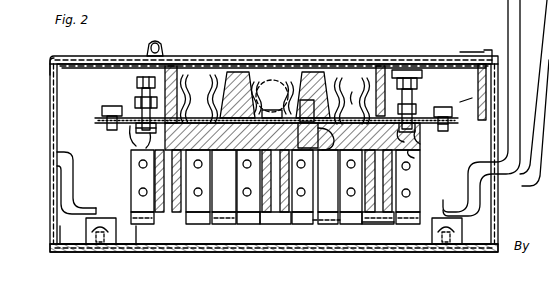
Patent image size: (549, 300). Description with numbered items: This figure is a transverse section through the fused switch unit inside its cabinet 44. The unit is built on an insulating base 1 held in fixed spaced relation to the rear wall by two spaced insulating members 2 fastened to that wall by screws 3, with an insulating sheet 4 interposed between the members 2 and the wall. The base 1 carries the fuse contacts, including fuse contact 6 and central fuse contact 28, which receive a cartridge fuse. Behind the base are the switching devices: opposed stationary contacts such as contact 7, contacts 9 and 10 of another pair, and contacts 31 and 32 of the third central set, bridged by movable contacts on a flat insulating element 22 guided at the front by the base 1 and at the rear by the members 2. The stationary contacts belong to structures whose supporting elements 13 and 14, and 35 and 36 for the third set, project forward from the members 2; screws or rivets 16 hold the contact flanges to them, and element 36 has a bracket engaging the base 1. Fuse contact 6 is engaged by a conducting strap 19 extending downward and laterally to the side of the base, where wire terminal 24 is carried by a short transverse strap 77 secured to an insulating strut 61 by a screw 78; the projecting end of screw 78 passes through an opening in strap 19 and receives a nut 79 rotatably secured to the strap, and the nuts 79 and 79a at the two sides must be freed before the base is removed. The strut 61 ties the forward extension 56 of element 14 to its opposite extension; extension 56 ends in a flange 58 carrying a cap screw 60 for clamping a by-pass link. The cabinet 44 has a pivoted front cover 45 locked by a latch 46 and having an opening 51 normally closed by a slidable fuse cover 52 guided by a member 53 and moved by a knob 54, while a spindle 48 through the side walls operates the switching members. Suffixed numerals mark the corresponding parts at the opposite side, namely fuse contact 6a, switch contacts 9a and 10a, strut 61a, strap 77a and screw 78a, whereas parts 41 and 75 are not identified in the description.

The insulating base 1 is at (400, 78).
The insulating supporting members 2 is at (240, 244).
The screws 3 is at (112, 234).
The sheet of insulating material 4 is at (152, 252).
The fuse contact 6 is at (364, 92).
The insulating block 6a is at (224, 88).
The stationary switch contact 7 is at (292, 108).
The stationary switch contact 9 is at (370, 216).
The contact plate 9a is at (196, 176).
The stationary switch contact 10 is at (410, 186).
The terminal block 10a is at (132, 186).
The supporting element 13 is at (322, 216).
The supporting element 14 is at (406, 140).
The screws or rivets 16 is at (416, 192).
The conducting strap 19 is at (351, 100).
The flat insulating element 22 is at (372, 222).
The wire connecting terminal 24 is at (450, 112).
The fuse contact 28 is at (278, 88).
The switch contact 31 is at (264, 187).
The switch contact 32 is at (302, 187).
The supporting element 35 is at (236, 212).
The supporting element 36 is at (300, 212).
The clamp 41 is at (316, 135).
The cabinet 44 is at (384, 252).
The front cover 45 is at (50, 62).
The latch 46 is at (490, 50).
The spindle 48 is at (466, 200).
The opening in cover 51 is at (274, 50).
The fuse cover 52 is at (200, 58).
The guiding member 53 is at (461, 49).
The knob 54 is at (155, 42).
The forward extension 56 is at (416, 110).
The flange 58 is at (414, 98).
The cap screw 60 is at (476, 83).
The insulating strut 61 is at (418, 134).
The spring contact 61a is at (128, 132).
The conductor bar 75 is at (276, 115).
The transverse strap 77 is at (450, 128).
The nut 77a is at (116, 128).
The screw 78 is at (420, 158).
The lead wire 78a is at (129, 144).
The nut 79 is at (471, 92).
The nut 79a is at (138, 106).